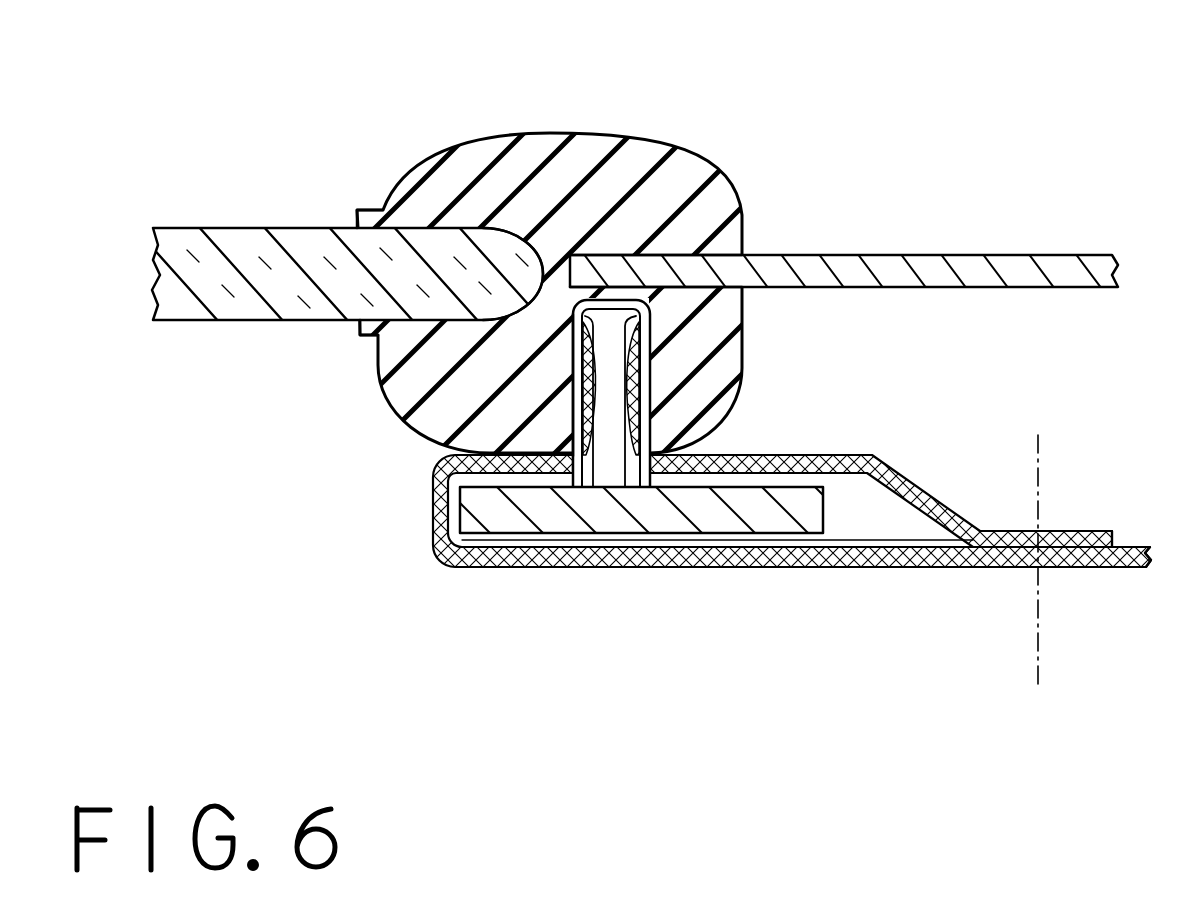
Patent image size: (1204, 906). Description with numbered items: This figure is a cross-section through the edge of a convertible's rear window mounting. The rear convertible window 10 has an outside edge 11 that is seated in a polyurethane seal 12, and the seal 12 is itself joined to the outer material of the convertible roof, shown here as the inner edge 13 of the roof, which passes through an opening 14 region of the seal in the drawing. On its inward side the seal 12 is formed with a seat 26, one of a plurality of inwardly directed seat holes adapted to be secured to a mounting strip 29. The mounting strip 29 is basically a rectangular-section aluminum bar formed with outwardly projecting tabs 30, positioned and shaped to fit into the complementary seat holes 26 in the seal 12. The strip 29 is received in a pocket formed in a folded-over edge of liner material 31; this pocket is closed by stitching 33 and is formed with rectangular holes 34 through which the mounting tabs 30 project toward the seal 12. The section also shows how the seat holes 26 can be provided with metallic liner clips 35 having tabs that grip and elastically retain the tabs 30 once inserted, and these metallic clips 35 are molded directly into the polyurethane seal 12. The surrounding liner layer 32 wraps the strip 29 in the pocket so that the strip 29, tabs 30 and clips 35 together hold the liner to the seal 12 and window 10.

The rear convertible window 10 is at (223, 238).
The outside edge 11 is at (468, 250).
The polyurethane seal 12 is at (586, 153).
The inner edge 13 is at (838, 257).
The slot in holder body 14 is at (666, 270).
The seats 26 is at (571, 342).
The mounting strip 29 is at (500, 522).
The tabs 30 is at (598, 330).
The liner material 31 is at (1108, 565).
The sheath 32 is at (878, 515).
The stitching 33 is at (1040, 472).
The rectangular holes 34 is at (590, 465).
The metallic liner clips 35 is at (636, 382).